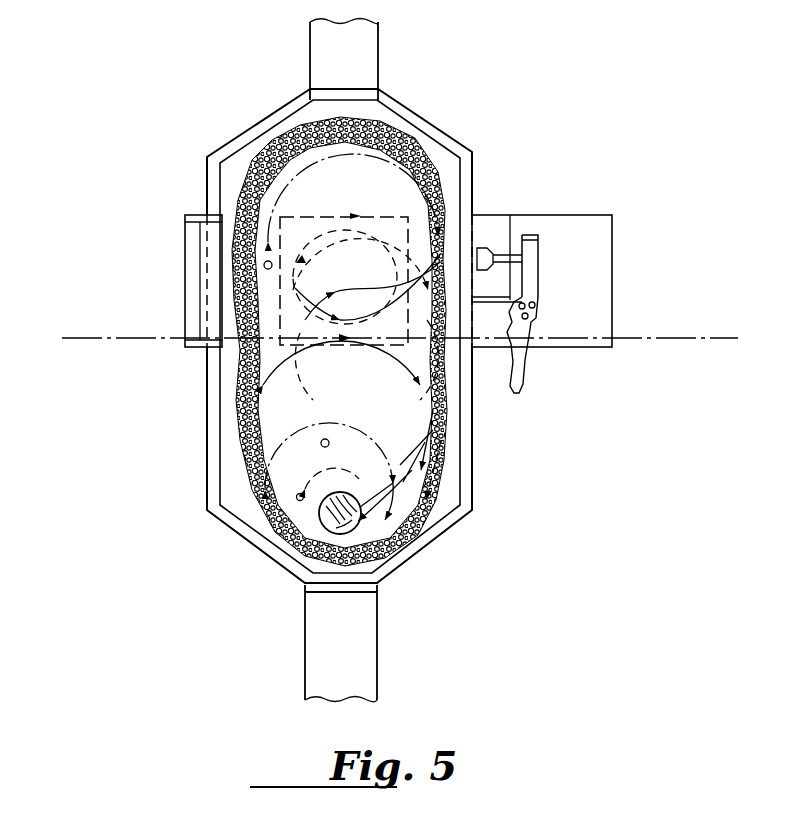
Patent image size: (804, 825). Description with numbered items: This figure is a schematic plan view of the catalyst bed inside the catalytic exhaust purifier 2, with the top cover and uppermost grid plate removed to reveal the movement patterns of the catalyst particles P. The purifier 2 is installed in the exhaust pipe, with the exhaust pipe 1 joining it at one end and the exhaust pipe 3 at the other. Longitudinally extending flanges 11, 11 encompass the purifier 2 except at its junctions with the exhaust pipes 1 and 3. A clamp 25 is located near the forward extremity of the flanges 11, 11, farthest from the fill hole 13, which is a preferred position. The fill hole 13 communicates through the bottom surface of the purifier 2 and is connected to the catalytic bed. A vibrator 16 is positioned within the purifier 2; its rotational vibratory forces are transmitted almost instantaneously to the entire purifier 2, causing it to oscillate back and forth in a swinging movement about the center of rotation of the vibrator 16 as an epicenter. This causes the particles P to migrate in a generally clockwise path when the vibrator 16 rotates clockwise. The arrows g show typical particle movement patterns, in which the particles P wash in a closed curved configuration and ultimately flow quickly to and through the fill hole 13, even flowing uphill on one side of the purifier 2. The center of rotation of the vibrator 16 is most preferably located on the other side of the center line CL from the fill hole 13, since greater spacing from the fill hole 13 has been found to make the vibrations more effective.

The exhaust pipe 1 is at (362, 56).
The catalytic exhaust purifier 2 is at (328, 336).
The exhaust pipe 3 is at (361, 654).
The longitudinally extending flanges 11 is at (213, 430).
The fill hole 13 is at (476, 228).
The vibrator 16 is at (376, 216).
The clamp 25 is at (214, 249).
The particles P is at (432, 165).
The arrows g is at (296, 172).
The center line CL is at (391, 339).